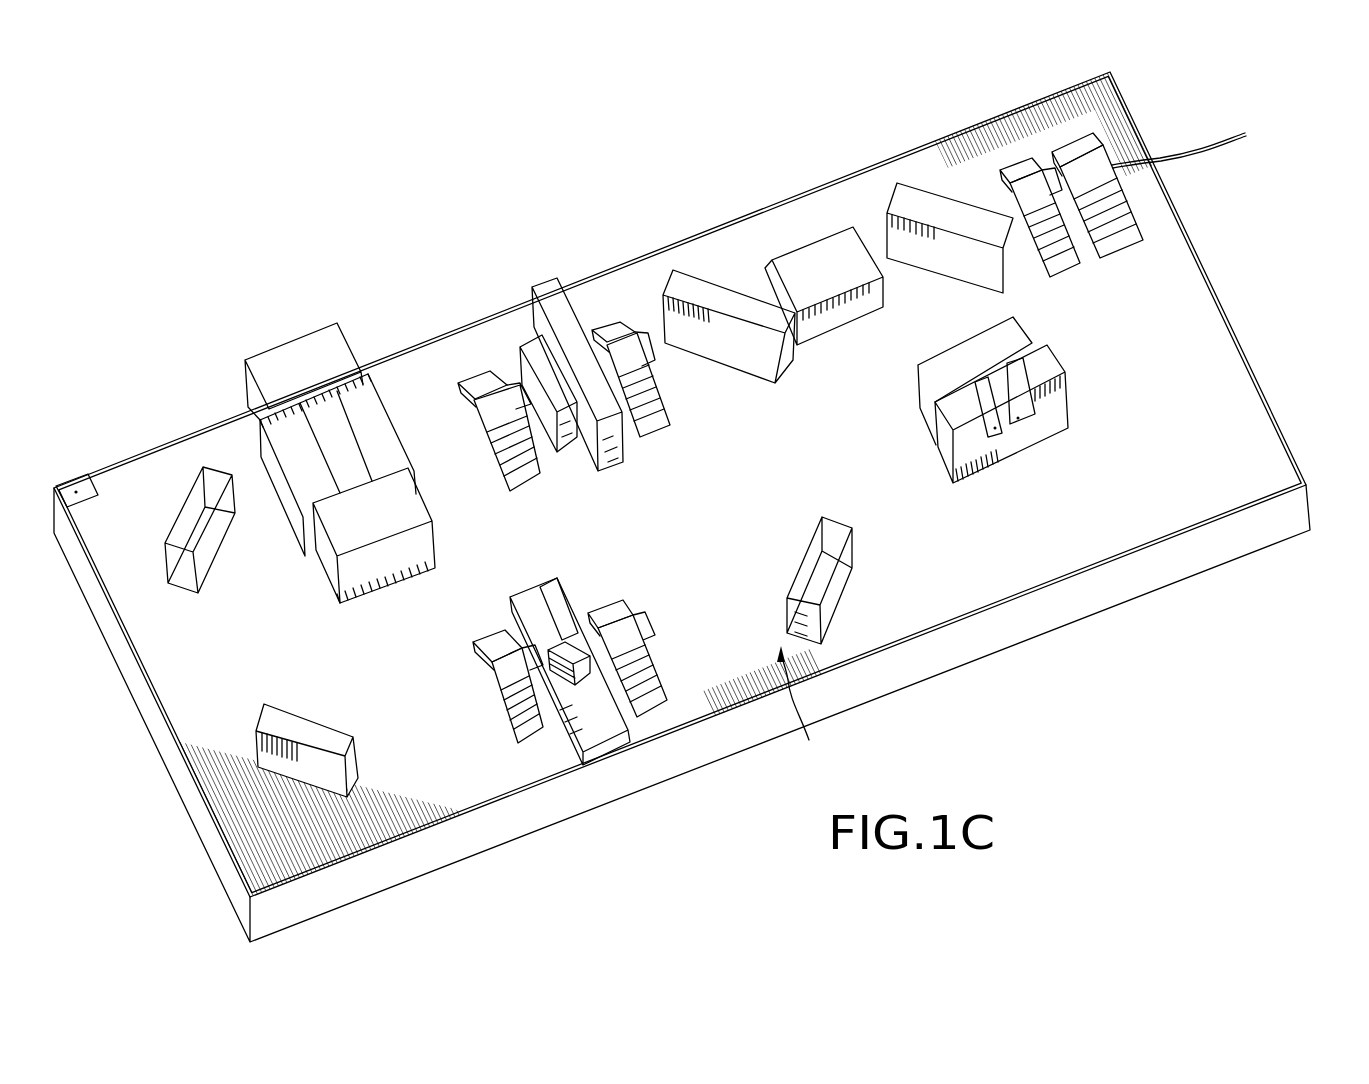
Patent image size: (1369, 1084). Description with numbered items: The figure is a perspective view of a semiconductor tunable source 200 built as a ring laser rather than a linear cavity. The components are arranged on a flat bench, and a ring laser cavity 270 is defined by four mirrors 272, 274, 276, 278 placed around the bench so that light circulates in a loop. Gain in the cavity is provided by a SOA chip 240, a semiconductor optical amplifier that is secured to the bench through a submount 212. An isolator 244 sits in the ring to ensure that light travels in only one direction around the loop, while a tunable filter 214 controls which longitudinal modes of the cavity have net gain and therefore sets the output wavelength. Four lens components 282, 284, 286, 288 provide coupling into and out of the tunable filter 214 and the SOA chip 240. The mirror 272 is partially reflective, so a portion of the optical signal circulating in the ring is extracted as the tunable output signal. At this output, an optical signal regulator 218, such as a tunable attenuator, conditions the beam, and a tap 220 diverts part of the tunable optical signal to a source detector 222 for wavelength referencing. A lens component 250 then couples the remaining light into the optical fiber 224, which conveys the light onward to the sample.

The semiconductor tunable source 200 is at (1302, 335).
The submount 212 is at (641, 741).
The tunable filter 214 is at (540, 287).
The optical signal regulator 218 is at (810, 242).
The tap 220 is at (925, 190).
The source detector 222 is at (1066, 360).
The optical fiber 224 is at (1205, 151).
The SOA chip 240 is at (588, 673).
The isolator 244 is at (308, 352).
The lens component 250 is at (1022, 158).
The ring laser cavity 270 is at (804, 710).
The mirror 272 is at (700, 277).
The mirror 274 is at (834, 590).
The mirror 276 is at (340, 790).
The mirror 278 is at (193, 487).
The lens component 282 is at (535, 741).
The lens component 284 is at (668, 704).
The lens component 286 is at (605, 325).
The lens component 288 is at (480, 380).